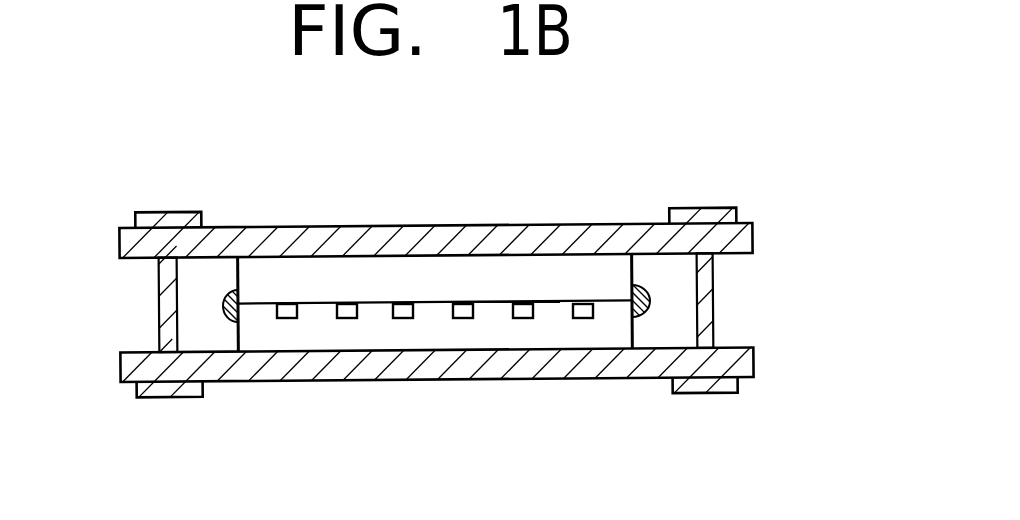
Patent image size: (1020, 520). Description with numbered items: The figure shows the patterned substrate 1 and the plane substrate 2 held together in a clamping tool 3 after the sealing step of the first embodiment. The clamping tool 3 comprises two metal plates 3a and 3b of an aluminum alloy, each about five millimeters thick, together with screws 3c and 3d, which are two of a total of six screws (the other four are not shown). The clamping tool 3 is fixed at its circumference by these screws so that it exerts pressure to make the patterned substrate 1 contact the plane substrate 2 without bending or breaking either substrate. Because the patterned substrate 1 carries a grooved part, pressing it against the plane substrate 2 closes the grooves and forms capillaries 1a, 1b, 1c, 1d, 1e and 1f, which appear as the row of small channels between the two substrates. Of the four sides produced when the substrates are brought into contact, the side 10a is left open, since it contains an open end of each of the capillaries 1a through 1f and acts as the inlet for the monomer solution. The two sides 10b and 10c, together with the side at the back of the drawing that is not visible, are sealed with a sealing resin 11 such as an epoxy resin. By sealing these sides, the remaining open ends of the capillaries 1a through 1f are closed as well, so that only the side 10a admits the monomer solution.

The patterned substrate 1 is at (443, 342).
The capillary 1a is at (287, 318).
The capillary 1b is at (347, 318).
The capillary 1c is at (403, 318).
The capillary 1d is at (468, 318).
The capillary 1e is at (523, 318).
The capillary 1f is at (583, 318).
The plane substrate 2 is at (466, 226).
The clamping tool 3 is at (377, 220).
The metal plate 3a is at (742, 245).
The metal plate 3b is at (743, 360).
The screw 3c is at (167, 300).
The screw 3d is at (713, 333).
The side 10a is at (487, 302).
The side 10b is at (235, 322).
The side 10c is at (637, 285).
The sealing resin 11 is at (232, 290).